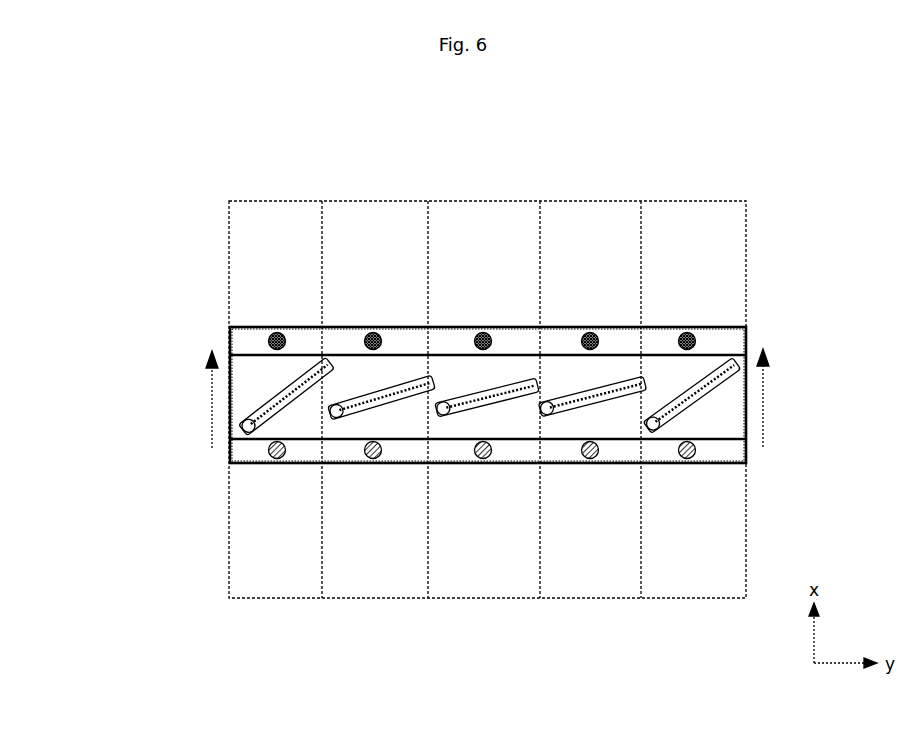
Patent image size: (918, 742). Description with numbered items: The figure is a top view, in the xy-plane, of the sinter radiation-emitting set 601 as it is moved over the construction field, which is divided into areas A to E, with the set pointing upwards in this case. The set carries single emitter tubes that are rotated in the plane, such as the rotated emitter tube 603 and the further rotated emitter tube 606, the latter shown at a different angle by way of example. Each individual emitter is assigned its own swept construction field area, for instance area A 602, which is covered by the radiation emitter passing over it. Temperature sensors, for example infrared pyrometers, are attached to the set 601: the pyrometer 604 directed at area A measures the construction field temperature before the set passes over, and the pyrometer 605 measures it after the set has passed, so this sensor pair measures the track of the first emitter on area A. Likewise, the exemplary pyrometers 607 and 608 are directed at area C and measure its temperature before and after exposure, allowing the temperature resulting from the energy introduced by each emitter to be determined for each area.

The sinter radiation-emitting set 601 is at (230, 327).
The area A on the construction field 602 is at (277, 530).
The rotated emitter tube 603 is at (255, 402).
The pyrometer directed to area A 604 is at (277, 330).
The pyrometer directed at area A 605 is at (277, 463).
The further rotated emitter tube 606 is at (590, 255).
The pyrometer directed at area C 607 is at (485, 383).
The pyrometer directed at area C 608 is at (483, 463).